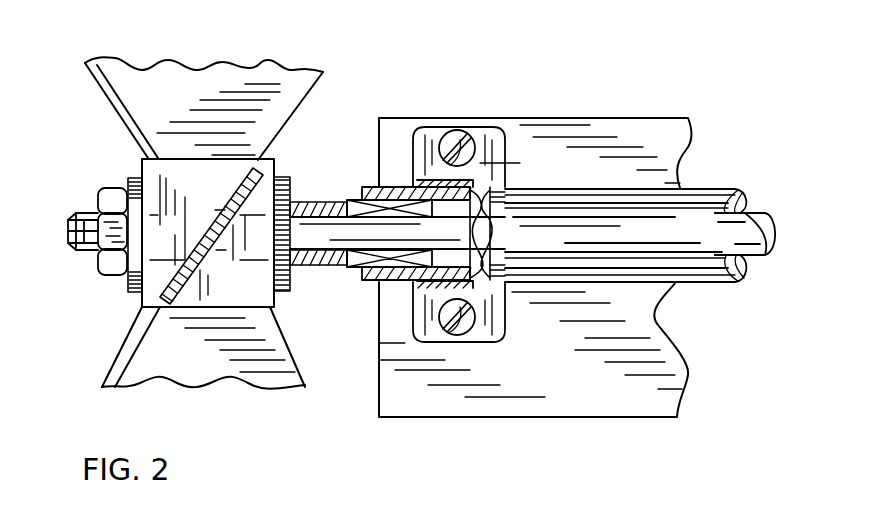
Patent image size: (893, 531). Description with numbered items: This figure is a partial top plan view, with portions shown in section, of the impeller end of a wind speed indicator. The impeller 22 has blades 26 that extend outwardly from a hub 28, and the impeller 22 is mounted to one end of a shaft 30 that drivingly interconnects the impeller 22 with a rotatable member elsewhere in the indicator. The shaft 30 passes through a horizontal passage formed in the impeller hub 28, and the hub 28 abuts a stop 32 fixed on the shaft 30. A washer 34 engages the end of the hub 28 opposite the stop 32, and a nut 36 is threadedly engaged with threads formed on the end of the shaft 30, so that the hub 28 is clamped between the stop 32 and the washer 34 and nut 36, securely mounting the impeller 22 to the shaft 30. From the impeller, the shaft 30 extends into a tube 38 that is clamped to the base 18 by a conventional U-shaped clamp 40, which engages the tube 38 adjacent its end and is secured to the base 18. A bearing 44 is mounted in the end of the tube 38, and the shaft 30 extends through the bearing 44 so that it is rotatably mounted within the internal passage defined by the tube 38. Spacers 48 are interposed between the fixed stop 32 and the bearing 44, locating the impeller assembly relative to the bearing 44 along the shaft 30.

The base 18 is at (602, 118).
The impeller 22 is at (97, 55).
The blades 26 is at (133, 285).
The hub 28 is at (148, 170).
The shaft 30 is at (757, 214).
The stop 32 is at (288, 176).
The washer 34 is at (142, 283).
The nut 36 is at (100, 272).
The tube 38 is at (712, 190).
The U-shaped clamp 40 is at (509, 320).
The bearing 44 is at (347, 270).
The spacers 48 is at (312, 206).